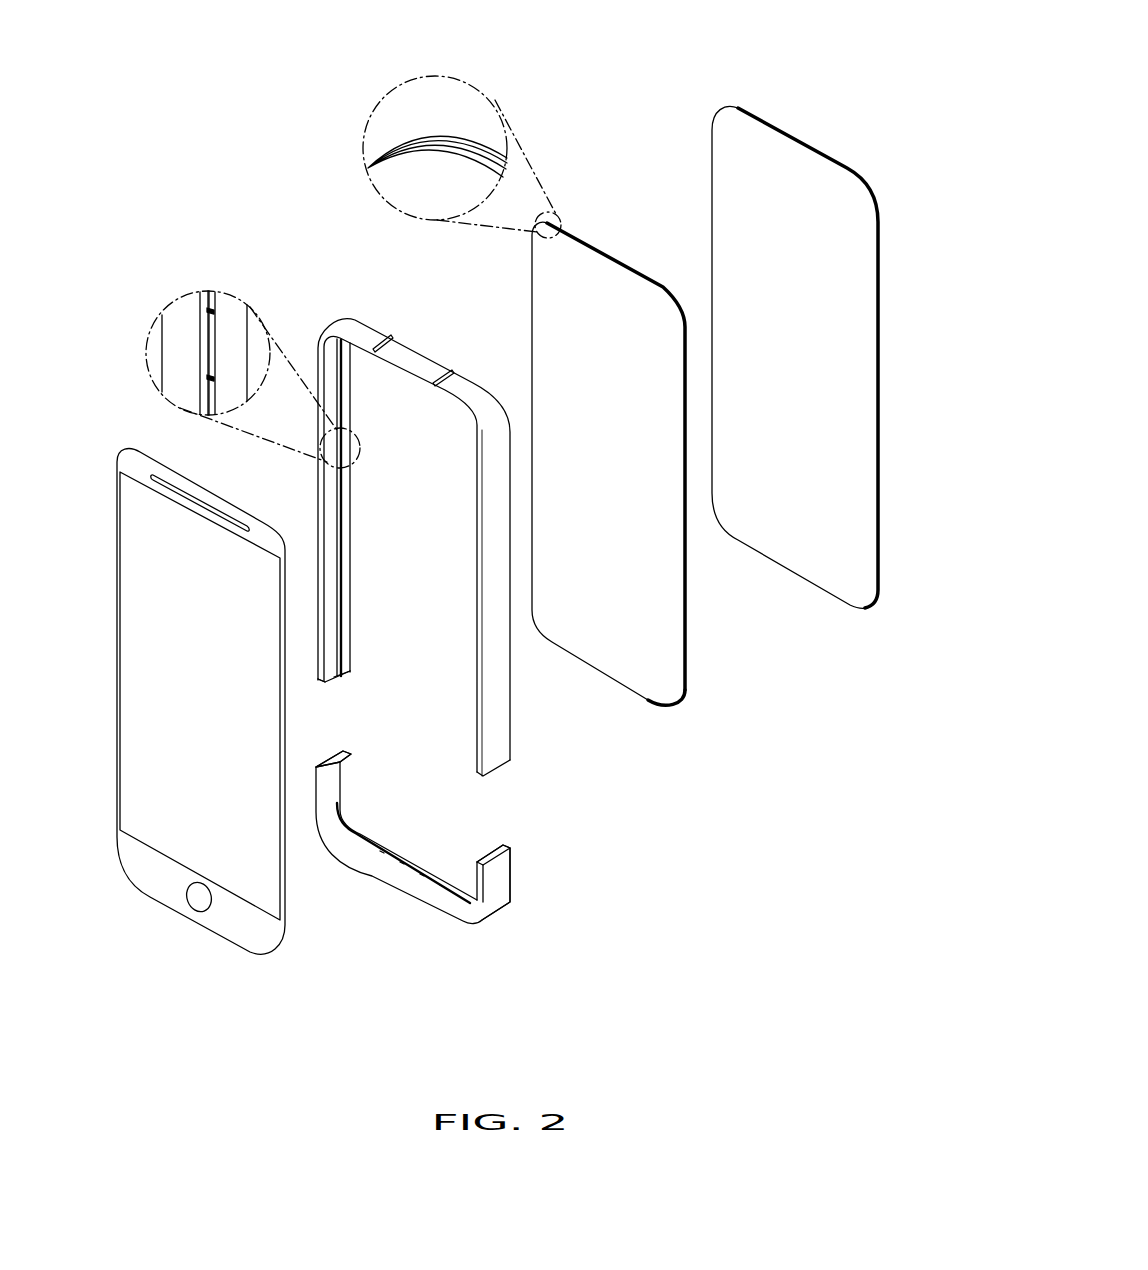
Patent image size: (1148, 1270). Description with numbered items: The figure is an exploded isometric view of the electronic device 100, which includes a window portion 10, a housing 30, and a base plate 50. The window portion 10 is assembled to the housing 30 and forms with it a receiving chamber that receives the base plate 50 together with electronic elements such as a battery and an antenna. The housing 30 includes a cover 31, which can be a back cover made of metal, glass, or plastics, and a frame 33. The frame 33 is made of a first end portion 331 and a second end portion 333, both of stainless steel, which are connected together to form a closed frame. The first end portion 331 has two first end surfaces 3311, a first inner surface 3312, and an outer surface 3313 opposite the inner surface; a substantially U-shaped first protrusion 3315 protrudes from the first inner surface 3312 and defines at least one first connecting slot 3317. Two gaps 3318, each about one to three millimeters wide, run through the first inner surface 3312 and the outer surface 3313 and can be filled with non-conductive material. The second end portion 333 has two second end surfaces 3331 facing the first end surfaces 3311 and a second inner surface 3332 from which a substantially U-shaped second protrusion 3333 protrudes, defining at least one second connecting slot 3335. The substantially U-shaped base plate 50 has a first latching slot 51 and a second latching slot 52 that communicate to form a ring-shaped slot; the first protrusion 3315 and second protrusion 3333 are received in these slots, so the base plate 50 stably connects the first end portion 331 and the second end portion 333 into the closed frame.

The electronic device 100 is at (416, 32).
The window portion 10 is at (230, 925).
The housing 30 is at (795, 745).
The cover 31 is at (787, 552).
The frame 33 is at (649, 742).
The first end portion 331 is at (390, 511).
The first end surfaces 3311 is at (331, 683).
The first inner surface 3312 is at (347, 398).
The outer surface 3313 is at (422, 358).
The first protrusion 3315 is at (213, 332).
The first connecting slot 3317 is at (207, 312).
The gap 3318 is at (383, 337).
The second end portion 333 is at (476, 854).
The second end surfaces 3331 is at (323, 763).
The second inner surface 3332 is at (372, 847).
The second protrusion 3333 is at (433, 893).
The second connecting slot 3335 is at (400, 872).
The base plate 50 is at (549, 390).
The first latching slot 51 is at (473, 150).
The second latching slot 52 is at (683, 702).